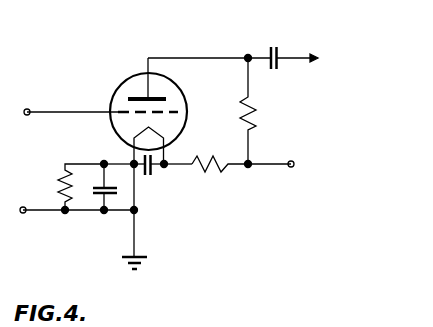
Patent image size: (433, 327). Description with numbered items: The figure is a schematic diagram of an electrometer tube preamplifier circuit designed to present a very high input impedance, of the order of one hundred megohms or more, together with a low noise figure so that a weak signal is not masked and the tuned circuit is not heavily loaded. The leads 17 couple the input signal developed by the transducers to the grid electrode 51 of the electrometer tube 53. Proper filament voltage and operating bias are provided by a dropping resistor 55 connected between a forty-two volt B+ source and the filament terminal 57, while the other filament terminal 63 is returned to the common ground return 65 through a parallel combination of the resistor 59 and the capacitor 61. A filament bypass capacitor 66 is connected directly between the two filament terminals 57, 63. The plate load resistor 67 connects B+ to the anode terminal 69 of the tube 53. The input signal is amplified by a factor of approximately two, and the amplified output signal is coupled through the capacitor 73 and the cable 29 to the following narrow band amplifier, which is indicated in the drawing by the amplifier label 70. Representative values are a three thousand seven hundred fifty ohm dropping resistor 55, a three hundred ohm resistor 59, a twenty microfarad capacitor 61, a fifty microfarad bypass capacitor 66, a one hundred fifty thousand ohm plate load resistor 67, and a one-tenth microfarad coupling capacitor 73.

The leads 17 is at (28, 108).
The cable 29 is at (289, 54).
The grid electrode 51 is at (110, 111).
The electrometer tube 53 is at (121, 89).
The dropping resistor 55 is at (225, 174).
The filament terminal 57 is at (165, 150).
The resistor 59 is at (63, 168).
The capacitor 61 is at (96, 192).
The filament terminal 63 is at (129, 149).
The common ground return 65 is at (133, 237).
The filament bypass capacitor 66 is at (153, 178).
The plate load resistor 67 is at (250, 123).
The anode terminal 69 is at (182, 91).
The amplifier 70 is at (340, 66).
The capacitor 73 is at (271, 45).